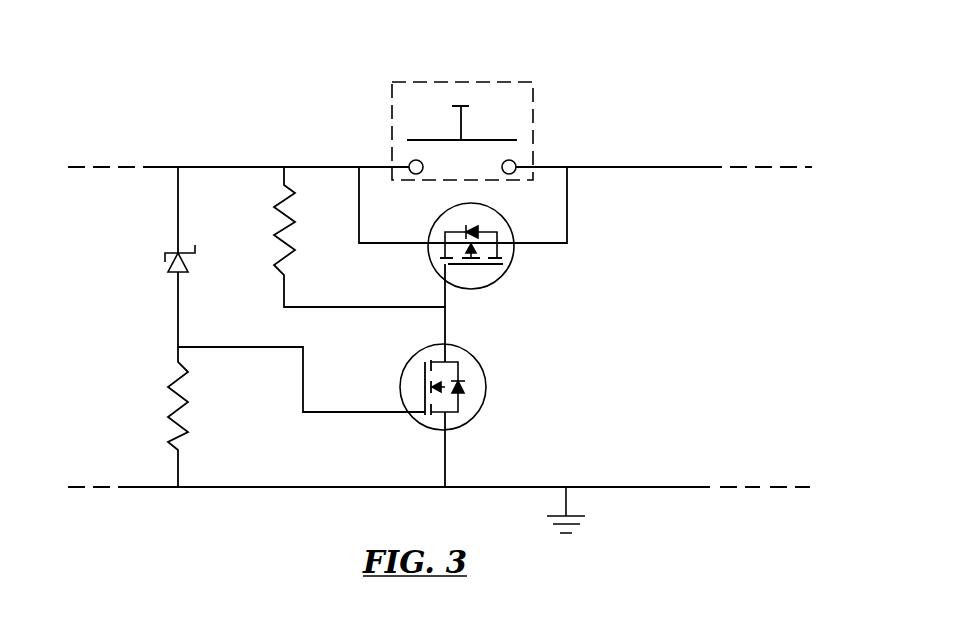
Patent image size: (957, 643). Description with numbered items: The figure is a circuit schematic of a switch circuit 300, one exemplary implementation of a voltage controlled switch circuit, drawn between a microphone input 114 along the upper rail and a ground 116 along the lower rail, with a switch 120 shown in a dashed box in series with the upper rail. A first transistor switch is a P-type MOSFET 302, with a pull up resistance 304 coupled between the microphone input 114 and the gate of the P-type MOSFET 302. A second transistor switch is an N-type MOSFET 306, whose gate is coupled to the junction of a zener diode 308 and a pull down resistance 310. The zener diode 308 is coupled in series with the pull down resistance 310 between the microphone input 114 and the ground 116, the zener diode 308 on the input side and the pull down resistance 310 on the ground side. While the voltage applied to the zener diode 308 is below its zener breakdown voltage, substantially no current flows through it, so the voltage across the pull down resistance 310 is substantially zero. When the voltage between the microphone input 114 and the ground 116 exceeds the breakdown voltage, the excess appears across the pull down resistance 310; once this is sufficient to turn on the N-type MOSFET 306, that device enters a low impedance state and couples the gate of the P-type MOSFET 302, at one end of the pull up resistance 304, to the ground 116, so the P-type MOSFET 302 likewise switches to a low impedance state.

The switch circuit 300 is at (690, 60).
The microphone input 114 is at (208, 167).
The ground 116 is at (606, 487).
The switch 120 is at (392, 118).
The P-type MOSFET 302 is at (497, 278).
The pull up resistance 304 is at (296, 250).
The N-type MOSFET 306 is at (468, 422).
The zener diode 308 is at (162, 259).
The pull down resistance 310 is at (170, 413).